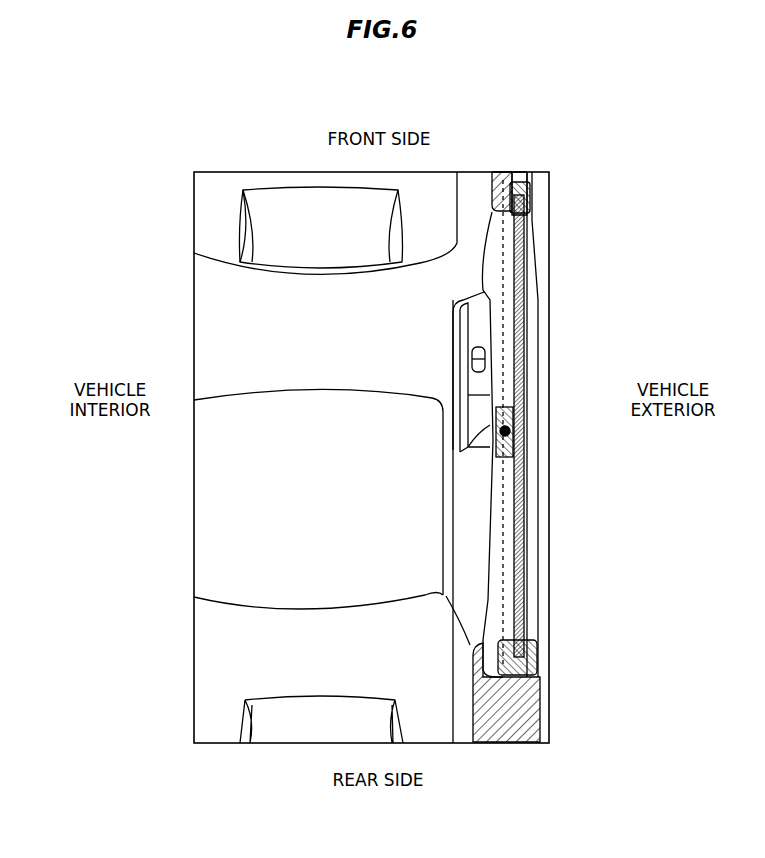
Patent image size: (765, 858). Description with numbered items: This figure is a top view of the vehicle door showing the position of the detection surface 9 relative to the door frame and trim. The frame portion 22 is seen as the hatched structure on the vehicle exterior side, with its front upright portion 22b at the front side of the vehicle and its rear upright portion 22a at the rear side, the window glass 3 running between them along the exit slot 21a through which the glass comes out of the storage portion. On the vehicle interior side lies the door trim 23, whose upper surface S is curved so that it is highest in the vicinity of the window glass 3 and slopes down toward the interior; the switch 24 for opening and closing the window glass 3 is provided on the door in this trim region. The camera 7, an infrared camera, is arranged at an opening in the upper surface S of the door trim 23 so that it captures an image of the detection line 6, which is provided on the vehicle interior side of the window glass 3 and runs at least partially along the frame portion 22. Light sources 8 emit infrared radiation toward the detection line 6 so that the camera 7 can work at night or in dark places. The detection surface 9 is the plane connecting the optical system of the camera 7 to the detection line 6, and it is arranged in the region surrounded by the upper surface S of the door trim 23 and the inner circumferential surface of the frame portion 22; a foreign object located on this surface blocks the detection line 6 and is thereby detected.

The front upright portion 22b is at (509, 170).
The frame portion 22 is at (520, 166).
The detection line 6 is at (523, 225).
The upper surface S is at (482, 295).
The door trim 23 is at (452, 322).
The switch 24 is at (470, 362).
The light source 8 is at (513, 410).
The camera 7 is at (513, 430).
The exit slot 21a is at (528, 500).
The window glass 3 is at (524, 572).
The detection surface 9 is at (500, 520).
The rear upright portion 22a is at (537, 660).